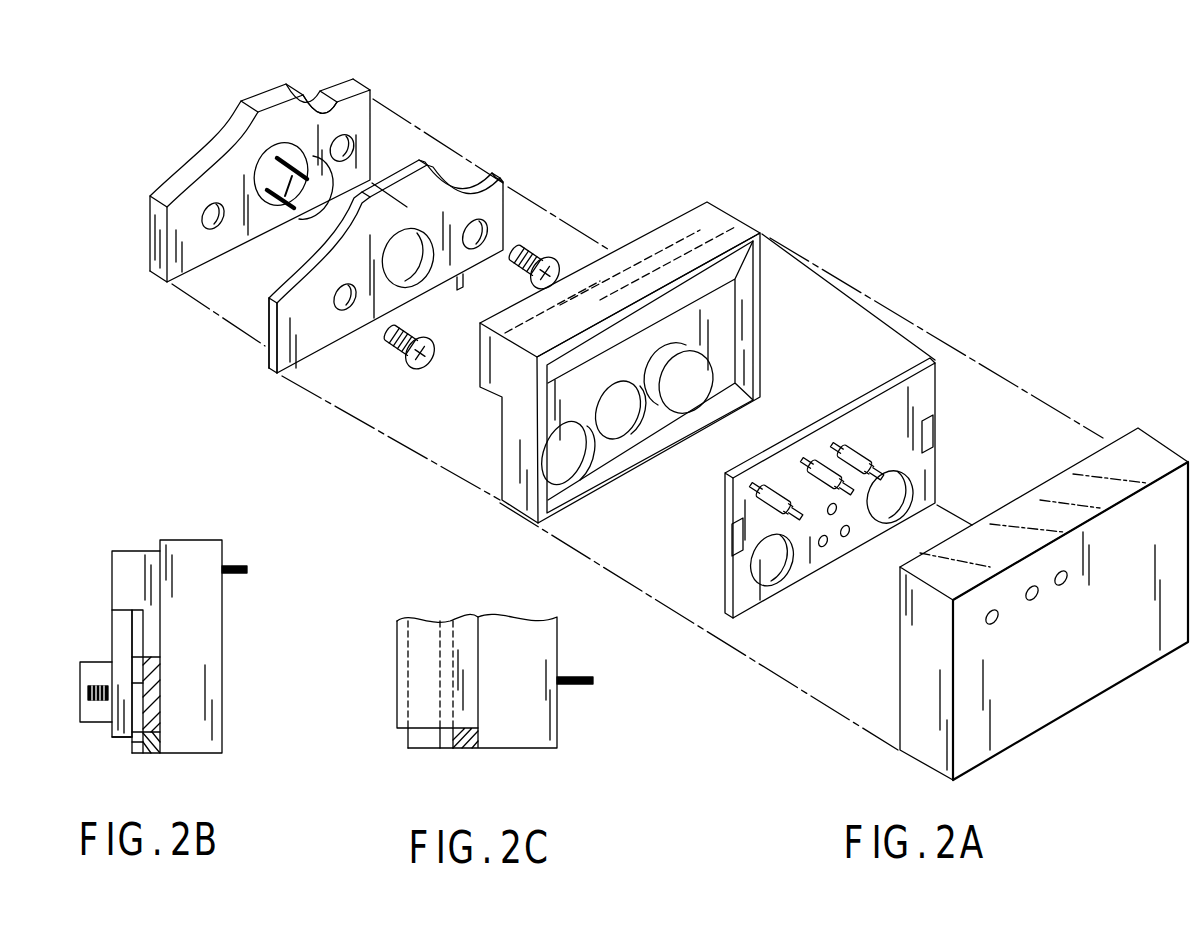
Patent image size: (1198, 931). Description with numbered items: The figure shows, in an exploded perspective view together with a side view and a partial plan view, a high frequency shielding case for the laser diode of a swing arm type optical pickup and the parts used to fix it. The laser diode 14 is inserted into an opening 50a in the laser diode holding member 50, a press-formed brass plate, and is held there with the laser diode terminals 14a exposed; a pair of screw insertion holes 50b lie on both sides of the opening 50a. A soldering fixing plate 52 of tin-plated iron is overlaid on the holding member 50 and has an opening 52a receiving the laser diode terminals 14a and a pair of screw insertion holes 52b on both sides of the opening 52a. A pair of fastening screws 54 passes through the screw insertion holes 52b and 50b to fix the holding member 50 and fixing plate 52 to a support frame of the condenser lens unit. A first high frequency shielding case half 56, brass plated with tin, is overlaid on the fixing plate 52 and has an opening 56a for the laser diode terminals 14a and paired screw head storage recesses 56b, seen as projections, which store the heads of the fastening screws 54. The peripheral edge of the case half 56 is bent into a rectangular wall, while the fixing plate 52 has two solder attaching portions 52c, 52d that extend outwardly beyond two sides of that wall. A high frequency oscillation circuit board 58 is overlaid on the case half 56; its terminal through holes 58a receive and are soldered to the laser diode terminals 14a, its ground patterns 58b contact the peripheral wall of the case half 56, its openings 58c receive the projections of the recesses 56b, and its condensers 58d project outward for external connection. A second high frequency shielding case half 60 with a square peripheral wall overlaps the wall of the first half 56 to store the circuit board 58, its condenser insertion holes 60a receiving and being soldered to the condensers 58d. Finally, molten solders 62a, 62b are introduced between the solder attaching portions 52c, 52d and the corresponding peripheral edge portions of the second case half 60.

In FIG. 2A, the laser diode 14 is at (263, 170).
In FIG. 2B, the laser diode 14 is at (88, 722).
In FIG. 2A, the laser diode terminals 14a is at (310, 221).
In FIG. 2A, the laser diode holding member 50 is at (312, 120).
In FIG. 2B, the laser diode holding member 50 is at (123, 630).
In FIG. 2C, the laser diode holding member 50 is at (408, 738).
In FIG. 2A, the opening 50a is at (263, 123).
In FIG. 2A, the screw insertion holes 50b is at (357, 150).
In FIG. 2A, the soldering fixing plate 52 is at (507, 186).
In FIG. 2B, the soldering fixing plate 52 is at (133, 612).
In FIG. 2C, the soldering fixing plate 52 is at (448, 630).
In FIG. 2A, the opening 52a is at (412, 274).
In FIG. 2A, the screw insertion holes 52b is at (480, 216).
In FIG. 2A, the solder attaching portion 52c is at (281, 340).
In FIG. 2B, the solder attaching portion 52c is at (135, 683).
In FIG. 2C, the solder attaching portion 52c is at (443, 740).
In FIG. 2A, the solder attaching portion 52d is at (490, 273).
In FIG. 2B, the solder attaching portion 52d is at (135, 753).
In FIG. 2A, the fastening screws 54 is at (423, 366).
In FIG. 2B, the fastening screws 54 is at (88, 693).
In FIG. 2A, the first high frequency shielding case half 56 is at (728, 213).
In FIG. 2B, the first high frequency shielding case half 56 is at (132, 560).
In FIG. 2C, the first high frequency shielding case half 56 is at (418, 628).
In FIG. 2A, the opening 56a is at (612, 397).
In FIG. 2A, the screw head storage recesses 56b is at (706, 380).
In FIG. 2A, the high frequency oscillation circuit board 58 is at (937, 398).
In FIG. 2A, the terminal through holes 58a is at (832, 516).
In FIG. 2A, the ground patterns 58b is at (933, 435).
In FIG. 2A, the openings 58c is at (912, 494).
In FIG. 2B, the openings 58c is at (248, 568).
In FIG. 2C, the openings 58c is at (592, 674).
In FIG. 2A, the condensers 58d is at (856, 448).
In FIG. 2A, the second high frequency shielding case half 60 is at (1148, 452).
In FIG. 2B, the second high frequency shielding case half 60 is at (190, 558).
In FIG. 2C, the second high frequency shielding case half 60 is at (559, 712).
In FIG. 2A, the condenser insertion holes 60a is at (1062, 586).
In FIG. 2B, the molten solder 62a is at (152, 658).
In FIG. 2B, the molten solder 62b is at (152, 753).
In FIG. 2C, the molten solder 62b is at (468, 750).